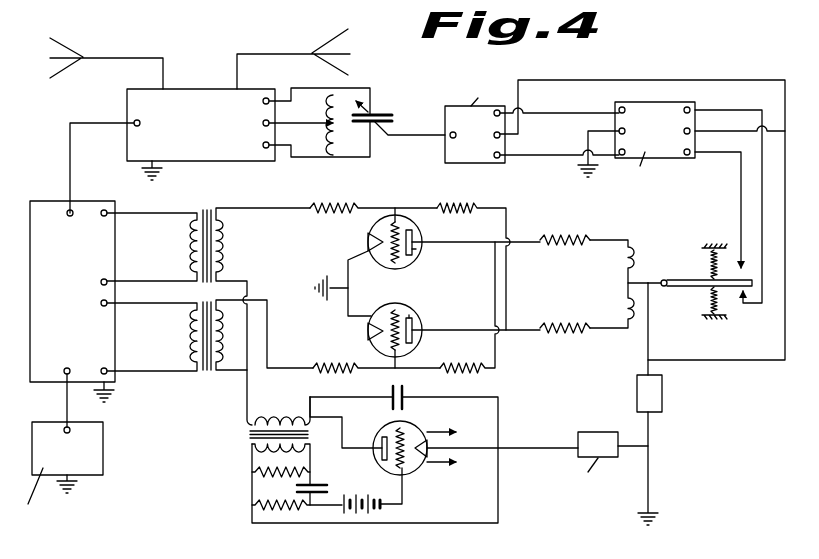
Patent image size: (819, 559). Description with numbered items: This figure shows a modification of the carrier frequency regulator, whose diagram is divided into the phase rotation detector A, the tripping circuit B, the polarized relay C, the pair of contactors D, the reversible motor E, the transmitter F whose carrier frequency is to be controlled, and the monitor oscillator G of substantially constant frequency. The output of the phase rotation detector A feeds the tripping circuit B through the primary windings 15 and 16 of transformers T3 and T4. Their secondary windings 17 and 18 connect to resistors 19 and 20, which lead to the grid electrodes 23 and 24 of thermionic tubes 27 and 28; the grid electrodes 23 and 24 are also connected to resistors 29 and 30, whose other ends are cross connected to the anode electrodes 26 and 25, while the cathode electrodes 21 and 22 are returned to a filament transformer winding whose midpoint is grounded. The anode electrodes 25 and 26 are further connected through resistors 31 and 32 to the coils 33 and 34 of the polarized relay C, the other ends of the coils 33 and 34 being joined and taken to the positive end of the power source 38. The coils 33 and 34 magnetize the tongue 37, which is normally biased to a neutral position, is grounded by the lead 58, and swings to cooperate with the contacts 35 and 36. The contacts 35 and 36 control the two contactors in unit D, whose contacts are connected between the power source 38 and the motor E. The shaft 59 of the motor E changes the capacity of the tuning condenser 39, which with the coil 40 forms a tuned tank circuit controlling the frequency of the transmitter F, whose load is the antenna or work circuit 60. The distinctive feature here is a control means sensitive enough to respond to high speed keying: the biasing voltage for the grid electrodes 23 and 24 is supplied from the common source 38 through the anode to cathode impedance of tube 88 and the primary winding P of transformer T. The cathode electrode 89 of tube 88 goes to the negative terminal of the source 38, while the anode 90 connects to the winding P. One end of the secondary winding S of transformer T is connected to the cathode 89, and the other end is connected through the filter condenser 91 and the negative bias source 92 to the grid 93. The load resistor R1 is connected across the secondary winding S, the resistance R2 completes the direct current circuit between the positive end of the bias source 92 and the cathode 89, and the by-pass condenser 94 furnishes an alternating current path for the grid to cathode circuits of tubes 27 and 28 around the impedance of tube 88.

The work circuit 60 is at (170, 55).
The coil 40 is at (327, 150).
The tuning condenser 39 is at (376, 128).
The shaft 59 is at (418, 136).
The transmitter F is at (192, 96).
The reversible motor E is at (475, 124).
The pair of contactors D is at (659, 142).
The polarized relay C is at (711, 344).
The phase rotation detector circuit A is at (72, 301).
The tripping circuit B is at (297, 385).
The monitor oscillator G is at (56, 466).
The transformer T4 is at (205, 210).
The transformer T3 is at (215, 376).
The primary winding 16 is at (185, 254).
The secondary winding 18 is at (230, 255).
The primary winding 15 is at (185, 330).
The secondary winding 17 is at (231, 346).
The resistor 20 is at (318, 204).
The resistor 30 is at (451, 203).
The resistor 19 is at (348, 355).
The resistor 29 is at (474, 355).
The cathode electrode 22 is at (366, 243).
The grid electrode 24 is at (398, 262).
The anode electrode 26 is at (416, 234).
The thermionic tube 28 is at (418, 249).
The cathode electrode 21 is at (368, 333).
The grid electrode 23 is at (396, 305).
The anode electrode 25 is at (418, 328).
The thermionic tube 27 is at (411, 317).
The resistor 32 is at (577, 224).
The resistor 31 is at (583, 336).
The relay coil 34 is at (622, 262).
The relay coil 33 is at (622, 306).
The tongue 37 is at (672, 279).
The lead 58 is at (709, 262).
The contact 36 is at (746, 268).
The contact 35 is at (744, 296).
The power source 38 is at (620, 401).
The by-pass condenser 94 is at (405, 393).
The tube 88 is at (405, 424).
The cathode electrode 89 is at (453, 432).
The anode 90 is at (383, 436).
The filter condenser 91 is at (327, 488).
The negative bias source 92 is at (382, 512).
The grid 93 is at (398, 463).
The primary winding P is at (250, 418).
The transformer T is at (248, 434).
The secondary winding S is at (252, 453).
The load resistor R1 is at (254, 473).
The resistance R2 is at (254, 503).